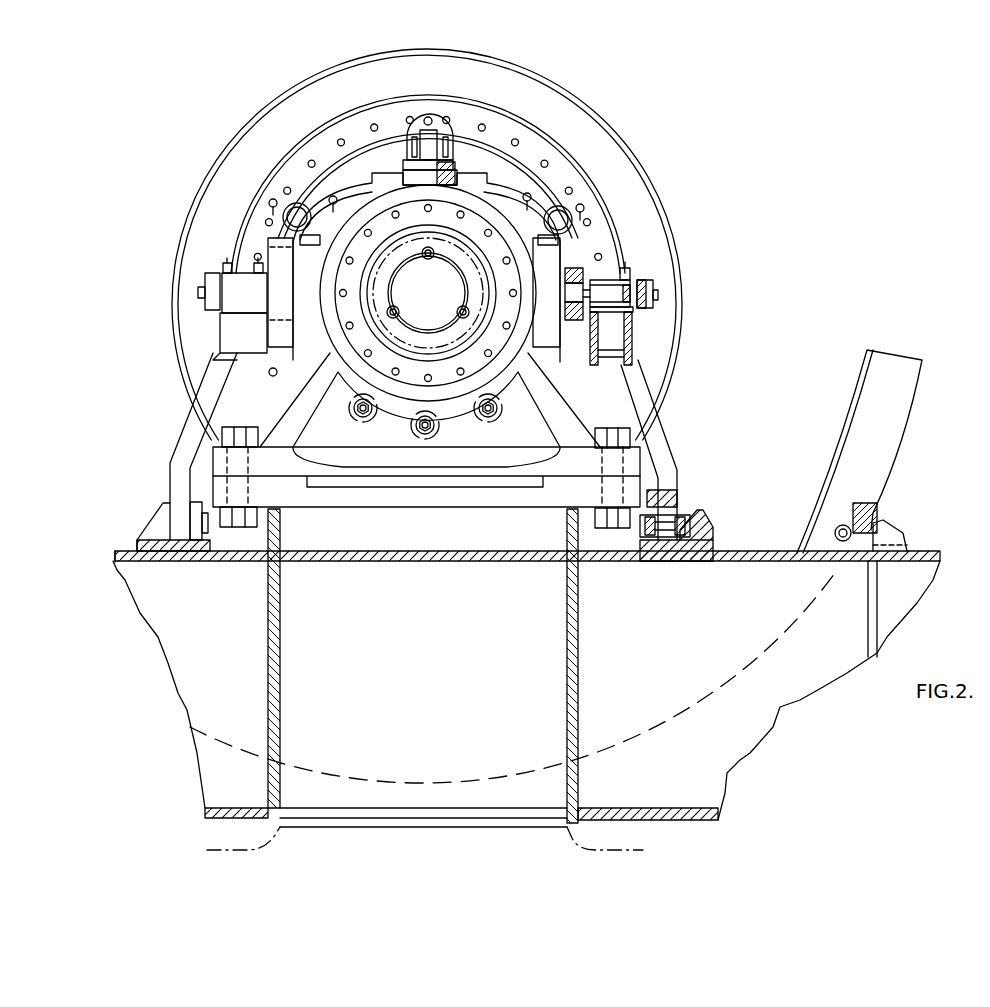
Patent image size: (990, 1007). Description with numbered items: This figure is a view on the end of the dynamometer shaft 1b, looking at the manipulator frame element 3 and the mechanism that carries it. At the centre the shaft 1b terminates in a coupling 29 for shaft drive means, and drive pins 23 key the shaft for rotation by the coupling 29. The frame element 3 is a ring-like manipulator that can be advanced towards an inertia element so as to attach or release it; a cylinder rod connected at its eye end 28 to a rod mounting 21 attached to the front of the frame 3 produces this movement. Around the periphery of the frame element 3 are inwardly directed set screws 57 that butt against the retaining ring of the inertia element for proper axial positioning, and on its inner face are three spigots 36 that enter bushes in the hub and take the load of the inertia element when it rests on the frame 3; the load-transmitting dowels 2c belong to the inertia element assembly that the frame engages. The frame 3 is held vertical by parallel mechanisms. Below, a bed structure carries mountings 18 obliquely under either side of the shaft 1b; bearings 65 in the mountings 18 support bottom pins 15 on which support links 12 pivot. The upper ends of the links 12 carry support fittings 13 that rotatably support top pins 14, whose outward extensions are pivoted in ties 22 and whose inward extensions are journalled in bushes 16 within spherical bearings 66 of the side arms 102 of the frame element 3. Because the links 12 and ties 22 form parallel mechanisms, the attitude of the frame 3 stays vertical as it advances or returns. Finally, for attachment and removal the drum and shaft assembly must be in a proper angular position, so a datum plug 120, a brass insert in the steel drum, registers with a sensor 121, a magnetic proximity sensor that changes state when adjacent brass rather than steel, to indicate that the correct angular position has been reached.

The dynamometer shaft 1b is at (445, 303).
The load-transmitting dowels 2c is at (337, 142).
The manipulator frame element 3 is at (363, 157).
The support link 12 is at (190, 437).
The support fittings 13 is at (245, 280).
The top pins 14 is at (647, 293).
The bottom pins 15 is at (705, 521).
The bushes 16 is at (430, 410).
The mountings 18 is at (158, 518).
The rod mounting 21 is at (393, 127).
The ties 22 is at (207, 288).
The drive pins 23 is at (430, 247).
The eye end 28 is at (432, 145).
The coupling 29 is at (522, 330).
The spigots 36 is at (287, 214).
The set screws 57 is at (430, 117).
The bearings 65 is at (665, 540).
The spherical bearings 66 is at (573, 277).
The side arms 102 is at (277, 333).
The datum plug 120 is at (888, 521).
The sensor 121 is at (851, 527).